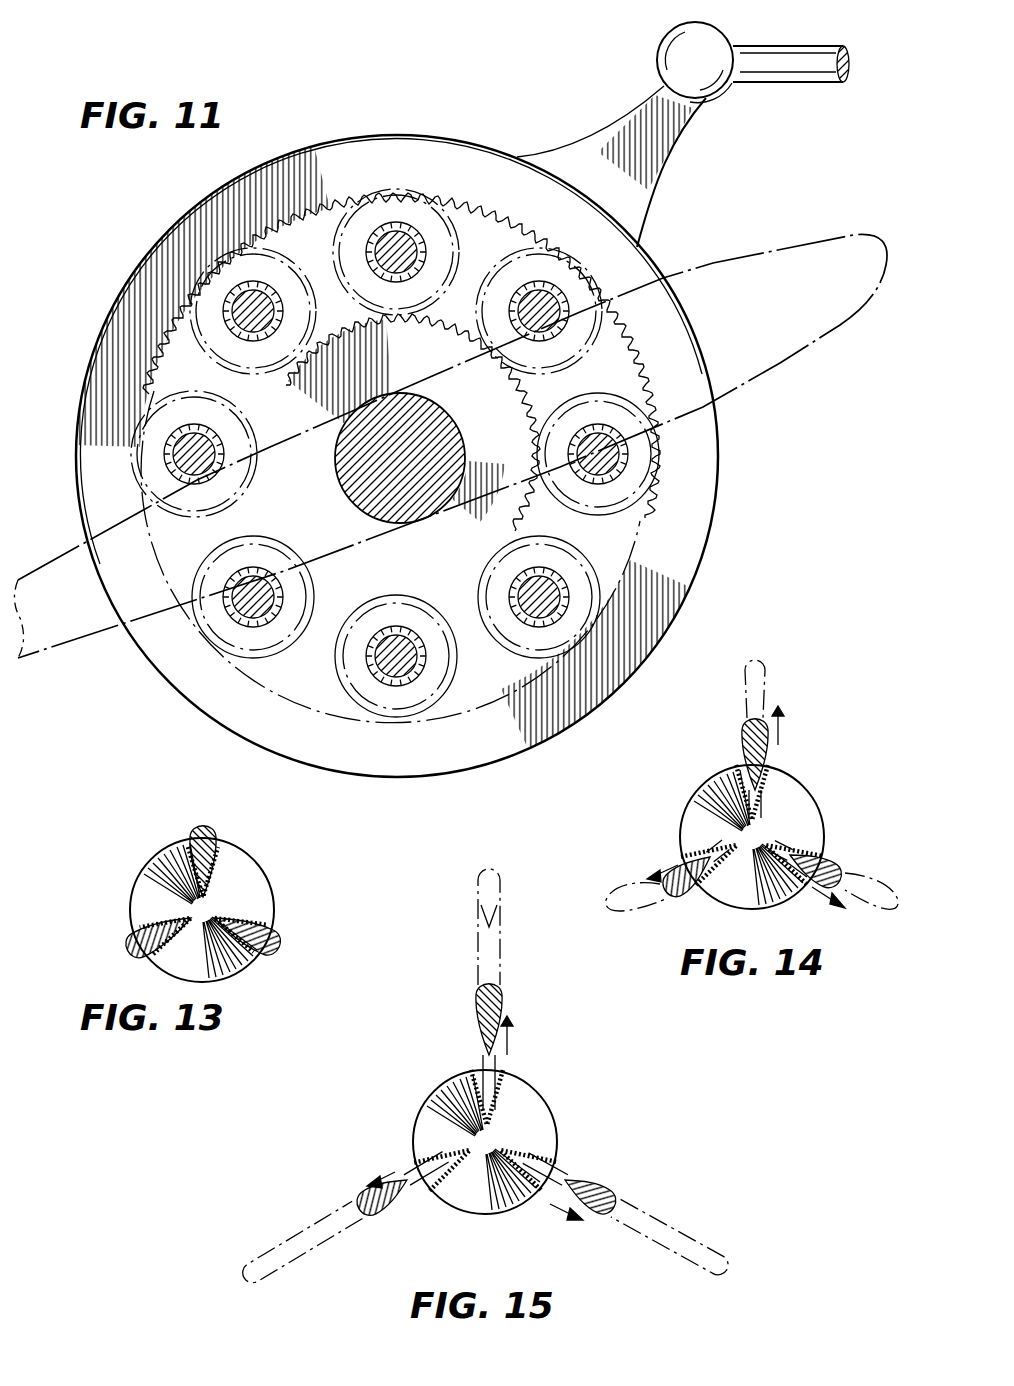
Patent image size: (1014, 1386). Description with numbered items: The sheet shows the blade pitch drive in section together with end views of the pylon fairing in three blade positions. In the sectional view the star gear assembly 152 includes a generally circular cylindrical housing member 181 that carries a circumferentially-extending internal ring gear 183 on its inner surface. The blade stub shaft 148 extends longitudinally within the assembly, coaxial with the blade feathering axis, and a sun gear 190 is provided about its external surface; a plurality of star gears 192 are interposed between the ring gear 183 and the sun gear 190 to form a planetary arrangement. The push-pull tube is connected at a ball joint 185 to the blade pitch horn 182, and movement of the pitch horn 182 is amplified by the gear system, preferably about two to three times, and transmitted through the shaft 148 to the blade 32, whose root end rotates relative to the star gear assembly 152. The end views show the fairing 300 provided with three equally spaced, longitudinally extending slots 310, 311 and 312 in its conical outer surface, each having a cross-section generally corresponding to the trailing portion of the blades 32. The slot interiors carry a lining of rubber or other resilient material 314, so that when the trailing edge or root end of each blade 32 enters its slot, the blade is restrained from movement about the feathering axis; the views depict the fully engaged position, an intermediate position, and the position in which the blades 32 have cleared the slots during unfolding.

In FIG. 11, the star gear assembly 152 is at (444, 108).
In FIG. 11, the housing member 181 is at (212, 222).
In FIG. 11, the internal ring gear 183 is at (470, 210).
In FIG. 11, the sun gear 190 is at (512, 414).
In FIG. 11, the blade stub shaft 148 is at (490, 446).
In FIG. 11, the star gears 192 is at (452, 262).
In FIG. 11, the blade pitch horn 182 is at (670, 130).
In FIG. 11, the ball joint 185 is at (726, 40).
In FIG. 11, the rotor blade 32 is at (742, 262).
In FIG. 13, the rotor blade 32 is at (213, 828).
In FIG. 14, the rotor blade 32 is at (775, 738).
In FIG. 15, the rotor blade 32 is at (500, 1018).
In FIG. 13, the fairing 300 is at (262, 880).
In FIG. 14, the fairing 300 is at (806, 802).
In FIG. 15, the fairing 300 is at (540, 1103).
In FIG. 13, the slot 310 is at (222, 862).
In FIG. 13, the slot 311 is at (268, 925).
In FIG. 13, the slot 312 is at (133, 930).
In FIG. 13, the resilient lining 314 is at (262, 903).
In FIG. 14, the resilient lining 314 is at (740, 772).
In FIG. 15, the resilient lining 314 is at (502, 1076).